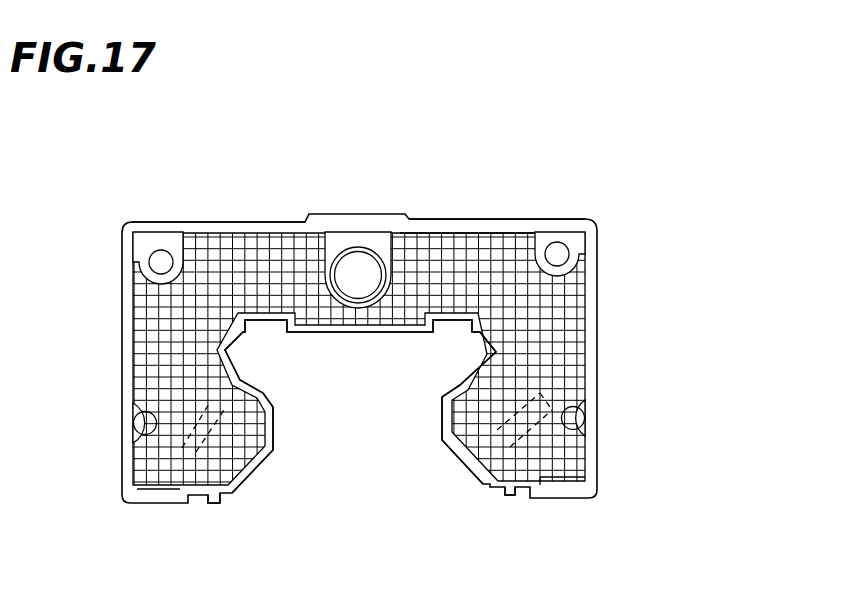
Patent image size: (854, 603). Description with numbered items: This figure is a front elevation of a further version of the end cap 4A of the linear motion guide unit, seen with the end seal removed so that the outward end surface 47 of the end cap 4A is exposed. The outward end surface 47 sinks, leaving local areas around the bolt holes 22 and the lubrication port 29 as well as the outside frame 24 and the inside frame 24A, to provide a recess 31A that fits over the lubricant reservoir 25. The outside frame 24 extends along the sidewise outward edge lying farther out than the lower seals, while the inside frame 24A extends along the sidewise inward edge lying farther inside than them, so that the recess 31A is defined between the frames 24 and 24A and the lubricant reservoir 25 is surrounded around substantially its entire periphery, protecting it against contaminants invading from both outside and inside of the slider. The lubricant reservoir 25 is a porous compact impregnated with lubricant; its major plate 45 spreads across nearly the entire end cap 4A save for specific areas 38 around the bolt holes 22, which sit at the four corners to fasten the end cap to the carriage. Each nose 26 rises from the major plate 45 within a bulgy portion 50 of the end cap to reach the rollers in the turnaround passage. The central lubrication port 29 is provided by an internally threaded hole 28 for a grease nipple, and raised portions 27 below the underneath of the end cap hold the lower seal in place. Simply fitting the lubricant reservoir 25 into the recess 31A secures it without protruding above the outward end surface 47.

The outside frame 24 is at (122, 332).
The inside frame 24A is at (263, 393).
The lubricant reservoir 25 is at (295, 255).
The major plate 45 is at (235, 262).
The outward end surface 47 is at (190, 230).
The end cap 4A is at (473, 225).
The recess 31A is at (511, 236).
The specific areas 38 is at (142, 276).
The bolt holes 22 is at (559, 250).
The internally threaded hole 28 is at (358, 250).
The lubrication port 29 is at (360, 270).
The raised portions 27 is at (220, 498).
The nose 26 is at (181, 450).
The bulgy portion 50 is at (148, 466).